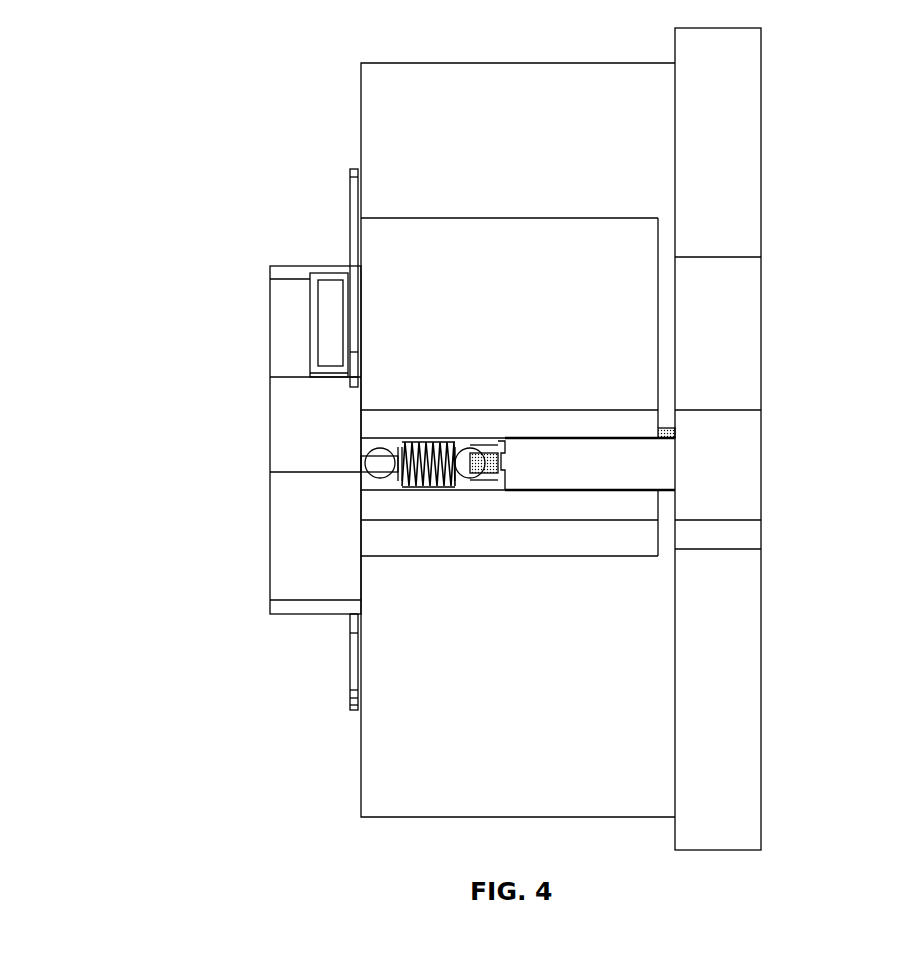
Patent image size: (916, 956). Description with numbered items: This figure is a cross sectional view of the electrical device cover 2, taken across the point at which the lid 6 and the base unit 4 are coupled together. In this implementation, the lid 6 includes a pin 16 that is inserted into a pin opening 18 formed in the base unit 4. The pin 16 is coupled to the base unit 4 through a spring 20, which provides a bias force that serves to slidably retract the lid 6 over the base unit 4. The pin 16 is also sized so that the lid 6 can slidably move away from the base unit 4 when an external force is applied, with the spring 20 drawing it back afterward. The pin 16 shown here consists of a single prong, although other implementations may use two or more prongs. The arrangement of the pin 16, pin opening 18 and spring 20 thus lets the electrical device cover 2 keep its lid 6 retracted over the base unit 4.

The electrical device cover 2 is at (322, 146).
The base unit 4 is at (393, 779).
The lid 6 is at (742, 200).
The pin 16 is at (622, 463).
The pin opening 18 is at (490, 488).
The spring 20 is at (390, 448).